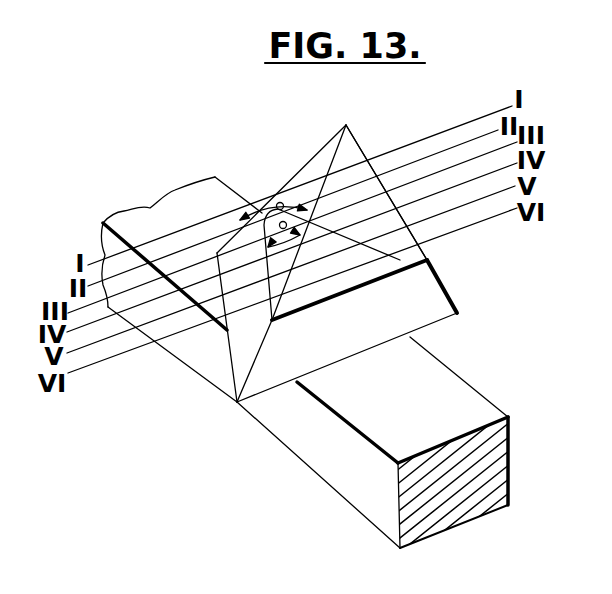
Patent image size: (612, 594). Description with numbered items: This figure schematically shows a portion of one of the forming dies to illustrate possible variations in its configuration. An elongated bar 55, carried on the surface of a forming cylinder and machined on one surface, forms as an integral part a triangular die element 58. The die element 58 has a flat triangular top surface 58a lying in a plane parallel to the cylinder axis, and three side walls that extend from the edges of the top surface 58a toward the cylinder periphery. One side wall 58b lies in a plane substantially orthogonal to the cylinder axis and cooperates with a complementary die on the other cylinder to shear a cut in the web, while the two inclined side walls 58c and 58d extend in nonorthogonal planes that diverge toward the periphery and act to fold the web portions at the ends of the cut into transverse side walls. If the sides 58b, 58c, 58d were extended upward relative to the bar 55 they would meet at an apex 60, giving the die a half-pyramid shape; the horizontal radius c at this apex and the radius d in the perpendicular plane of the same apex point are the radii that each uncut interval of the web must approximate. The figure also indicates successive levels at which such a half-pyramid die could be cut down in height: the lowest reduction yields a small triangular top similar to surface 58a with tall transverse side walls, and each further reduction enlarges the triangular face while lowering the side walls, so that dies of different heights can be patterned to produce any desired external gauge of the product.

The elongated bar 55 is at (457, 410).
The triangular die element 58 is at (423, 311).
The flat triangular top surface 58a is at (404, 260).
The die side wall 58b is at (283, 374).
The inclined die side wall 58c is at (247, 337).
The inclined die side wall 58d is at (384, 240).
The apex 60 is at (347, 126).
The horizontal radius c is at (290, 246).
The radius d is at (279, 201).